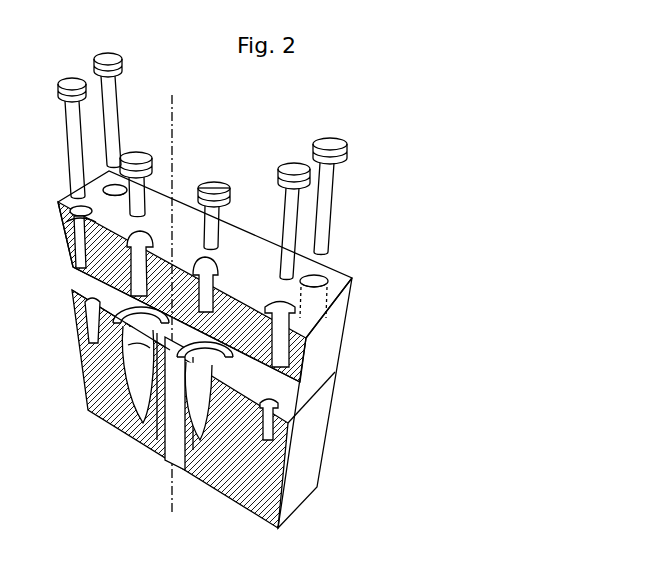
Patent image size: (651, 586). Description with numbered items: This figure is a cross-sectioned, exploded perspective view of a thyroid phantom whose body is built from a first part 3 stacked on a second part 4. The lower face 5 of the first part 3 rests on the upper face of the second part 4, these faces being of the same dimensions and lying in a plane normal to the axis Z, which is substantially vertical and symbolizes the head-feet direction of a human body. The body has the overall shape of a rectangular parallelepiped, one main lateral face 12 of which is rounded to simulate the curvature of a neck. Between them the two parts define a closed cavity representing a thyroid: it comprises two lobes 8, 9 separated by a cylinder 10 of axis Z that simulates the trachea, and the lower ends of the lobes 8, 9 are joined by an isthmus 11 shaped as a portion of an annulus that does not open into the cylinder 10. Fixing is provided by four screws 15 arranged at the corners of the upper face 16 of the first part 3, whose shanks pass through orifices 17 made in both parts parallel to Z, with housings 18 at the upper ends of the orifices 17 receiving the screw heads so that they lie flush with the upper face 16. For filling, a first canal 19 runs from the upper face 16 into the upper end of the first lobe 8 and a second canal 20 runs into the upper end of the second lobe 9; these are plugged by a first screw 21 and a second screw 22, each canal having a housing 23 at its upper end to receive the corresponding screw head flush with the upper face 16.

The first part 3 is at (337, 332).
The second part 4 is at (300, 493).
The lower face 5 is at (2, 420).
The first lobe 8 is at (137, 440).
The second lobe 9 is at (213, 487).
The cylinder 10 is at (167, 448).
The isthmus 11 is at (87, 365).
The main lateral face 12 is at (243, 218).
The screws 15 is at (71, 79).
The upper face 16 is at (190, 183).
The orifices 17 is at (84, 193).
The housings 18 is at (67, 198).
The first canal 19 is at (78, 231).
The second canal 20 is at (197, 263).
The first screw 21 is at (135, 156).
The second screw 22 is at (214, 181).
The housing 23 is at (138, 233).
The axis Z is at (176, 104).